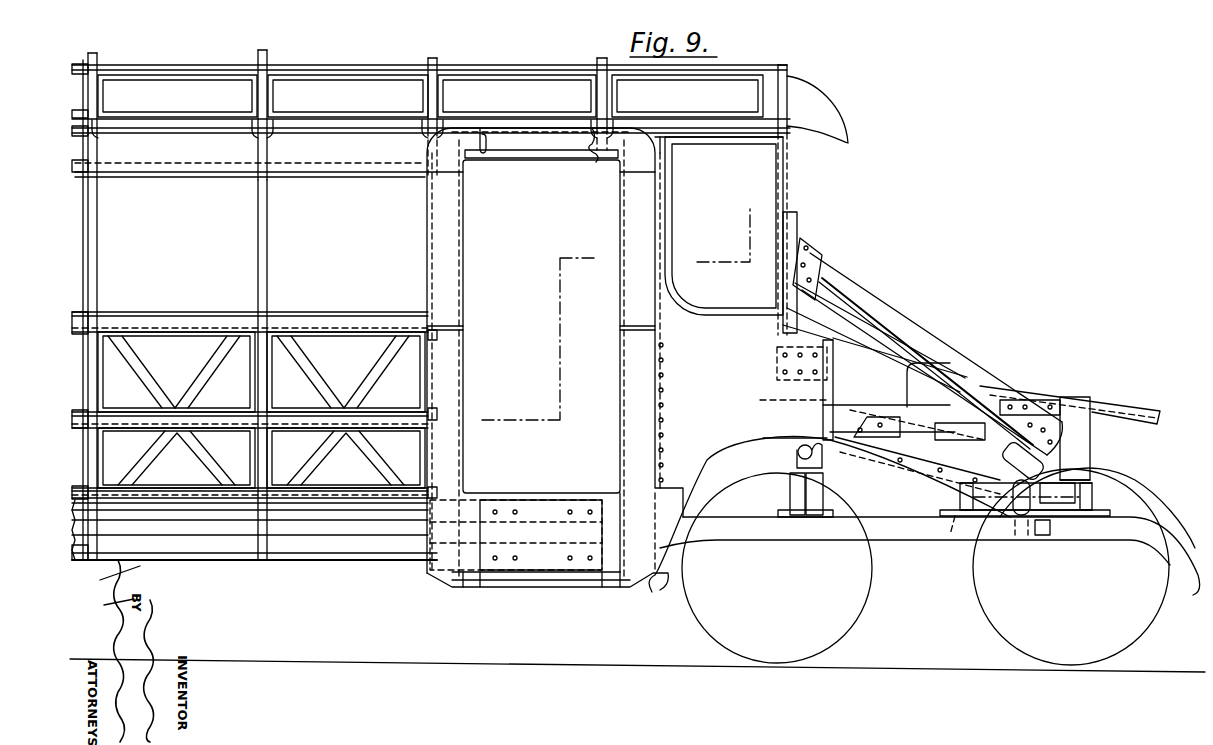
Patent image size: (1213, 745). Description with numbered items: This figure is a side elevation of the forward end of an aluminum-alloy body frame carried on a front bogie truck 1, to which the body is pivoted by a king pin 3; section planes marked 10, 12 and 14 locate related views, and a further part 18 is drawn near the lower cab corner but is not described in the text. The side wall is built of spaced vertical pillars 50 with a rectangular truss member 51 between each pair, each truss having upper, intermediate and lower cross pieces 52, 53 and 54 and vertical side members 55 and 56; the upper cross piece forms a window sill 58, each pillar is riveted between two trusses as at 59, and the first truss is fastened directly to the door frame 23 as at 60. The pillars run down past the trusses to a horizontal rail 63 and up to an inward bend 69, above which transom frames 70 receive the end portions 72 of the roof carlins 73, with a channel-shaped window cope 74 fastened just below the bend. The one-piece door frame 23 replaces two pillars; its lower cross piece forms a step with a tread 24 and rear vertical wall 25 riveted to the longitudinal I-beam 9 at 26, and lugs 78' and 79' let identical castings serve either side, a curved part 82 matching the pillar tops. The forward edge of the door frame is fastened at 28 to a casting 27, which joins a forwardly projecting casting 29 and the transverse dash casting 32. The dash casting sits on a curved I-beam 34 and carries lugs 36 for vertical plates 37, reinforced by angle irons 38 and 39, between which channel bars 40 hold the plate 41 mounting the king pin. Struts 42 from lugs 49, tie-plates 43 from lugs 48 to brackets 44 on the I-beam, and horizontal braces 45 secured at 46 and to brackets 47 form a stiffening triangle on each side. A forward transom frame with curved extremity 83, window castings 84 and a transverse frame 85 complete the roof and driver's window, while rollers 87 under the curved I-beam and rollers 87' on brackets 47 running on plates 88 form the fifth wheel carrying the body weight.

The front bogie truck 1 is at (913, 533).
The king pin 3 is at (1052, 527).
The longitudinal I-beam 9 is at (200, 536).
The section line of Fig. 10 is at (1112, 208).
The section line of Fig. 12 is at (543, 33).
The section line of Fig. 14 is at (400, 170).
The cab floor sill 18 is at (607, 560).
The door frame 23 is at (455, 288).
The tread 24 is at (560, 572).
The rear vertical wall 25 is at (567, 487).
The fastening of step wall to I-beam 26 is at (497, 513).
The casting 27 is at (702, 330).
The fastening of door frame to casting 28 is at (662, 390).
The forwardly projecting casting 29 is at (890, 307).
The dash casting 32 is at (796, 226).
The curved I-beam 34 is at (777, 422).
The integral lugs 36 is at (778, 347).
The vertical forwardly extending plate 37 is at (1077, 442).
The angle iron 38 is at (1113, 405).
The angle iron 39 is at (920, 457).
The channel bar 40 is at (967, 495).
The plate 41 is at (1087, 497).
The strut 42 is at (930, 338).
The tie-plate 43 is at (857, 293).
The bracket 44 is at (907, 328).
The horizontal brace 45 is at (967, 423).
The fastening of brace to I-beam 46 is at (887, 438).
The bracket 47 is at (1058, 402).
The integral lugs 48 is at (823, 272).
The integral lugs 49 is at (820, 255).
The vertical pillar 50 is at (258, 242).
The upper horizontal cross piece 52 is at (175, 322).
The rectangular truss member 51 is at (261, 372).
The intermediate horizontal cross piece 53 is at (172, 405).
The lower horizontal cross piece 54 is at (170, 487).
The vertical side member 55 is at (105, 360).
The vertical side member 56 is at (250, 372).
The window sill 58 is at (370, 312).
The pillar fastening 59 is at (270, 325).
The truss-to-door-frame fastening 60 is at (426, 333).
The horizontal rail 63 is at (370, 560).
The inwardly curved upper end of pillar 69 is at (262, 144).
The transom frame and carlin brace 70 is at (344, 72).
The downwardly extending end portion of roof carlin 72 is at (266, 95).
The roof carlin 73 is at (262, 58).
The window cope 74 is at (338, 174).
The lugs 78' is at (503, 168).
The lugs 79' is at (556, 354).
The curved part of upper cross piece 82 is at (537, 145).
The downwardly curved extremity of forward transom frame 83 is at (828, 105).
The additional castings 84 is at (767, 187).
The rectangular transversely extending frame 85 is at (788, 70).
The rollers 87 is at (788, 480).
The rollers 87' is at (1007, 528).
The plates 88 is at (962, 518).